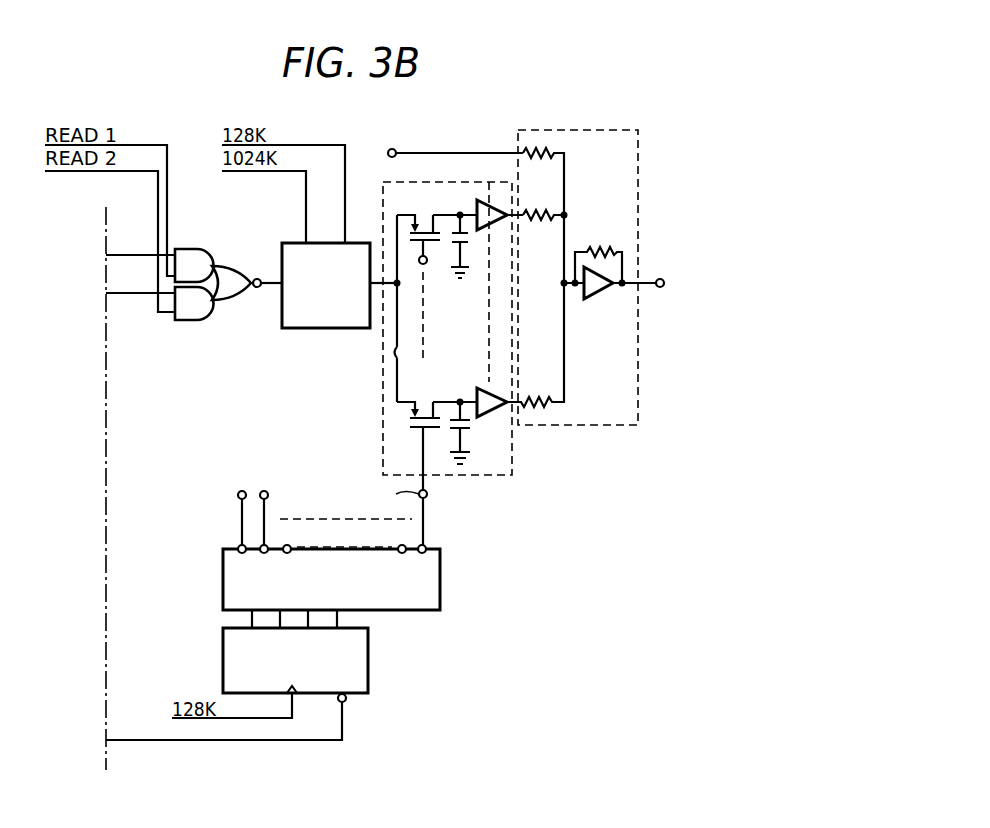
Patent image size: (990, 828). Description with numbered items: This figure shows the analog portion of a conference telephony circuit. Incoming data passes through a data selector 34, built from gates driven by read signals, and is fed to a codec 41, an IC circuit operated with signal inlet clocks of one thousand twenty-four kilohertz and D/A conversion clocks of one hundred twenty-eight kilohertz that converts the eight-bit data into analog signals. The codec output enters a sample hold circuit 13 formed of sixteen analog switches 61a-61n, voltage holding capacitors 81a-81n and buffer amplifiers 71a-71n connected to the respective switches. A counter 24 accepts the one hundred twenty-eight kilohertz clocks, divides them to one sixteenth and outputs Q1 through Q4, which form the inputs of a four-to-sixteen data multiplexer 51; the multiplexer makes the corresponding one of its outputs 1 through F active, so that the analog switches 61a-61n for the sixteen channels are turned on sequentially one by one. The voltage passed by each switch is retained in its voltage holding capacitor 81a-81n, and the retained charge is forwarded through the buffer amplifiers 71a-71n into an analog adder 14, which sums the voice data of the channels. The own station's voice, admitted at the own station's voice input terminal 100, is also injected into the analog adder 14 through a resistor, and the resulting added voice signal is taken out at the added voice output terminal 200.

The terminal 1 is at (419, 261).
The sample hold circuit 13 is at (517, 457).
The analog adder 14 is at (646, 140).
The counter 24 is at (368, 640).
The data selector 34 is at (228, 300).
The codec 41 is at (366, 243).
The data multiplexer 51 is at (440, 560).
The analog switch 61a is at (418, 229).
The analog switch 61n is at (418, 414).
The buffer amplifier 71a is at (477, 207).
The buffer amplifier 71n is at (477, 395).
The voltage holding capacitor 81a is at (452, 244).
The voltage holding capacitor 81n is at (465, 429).
The own station's voice input terminal 100 is at (393, 148).
The added voice output terminal 200 is at (665, 283).